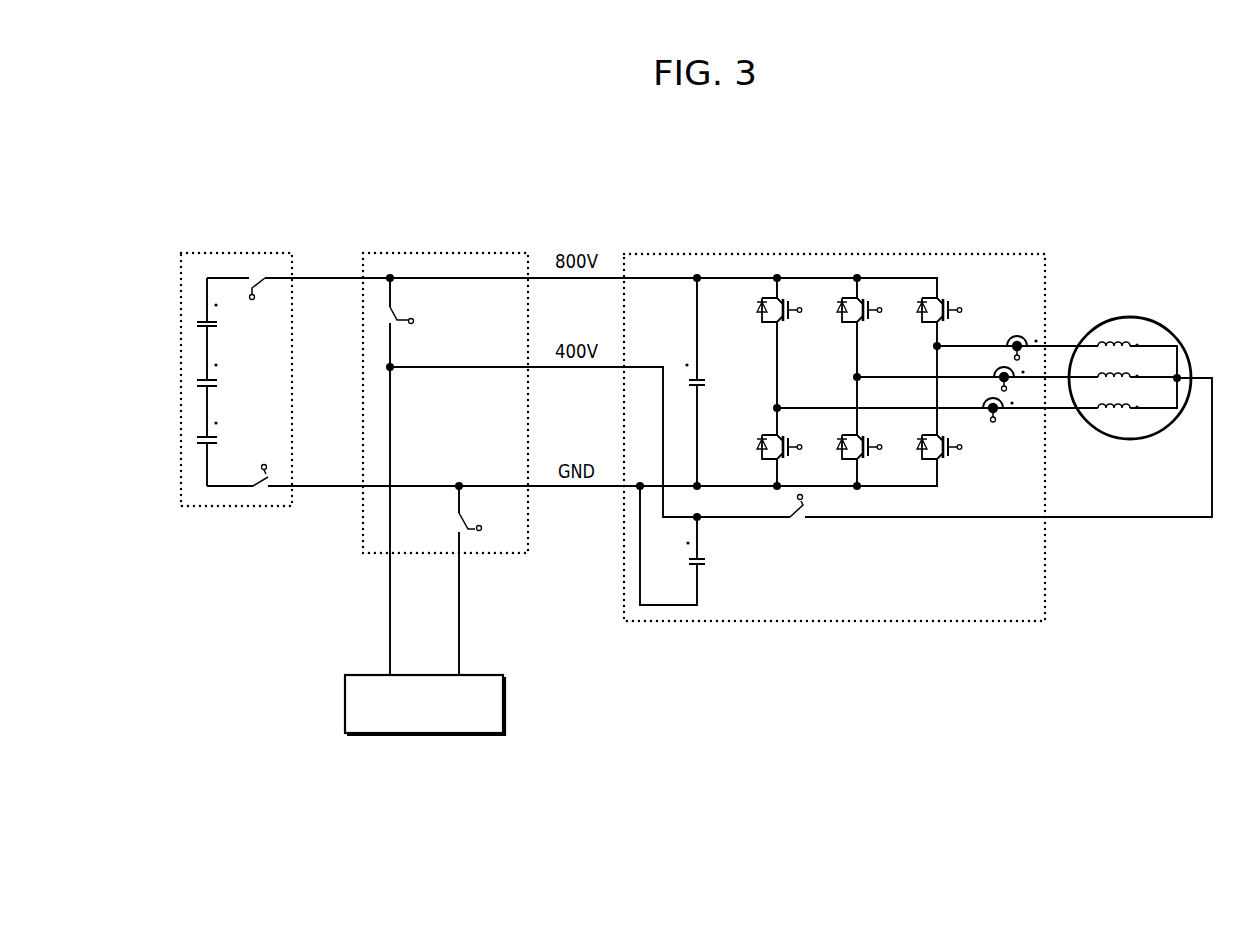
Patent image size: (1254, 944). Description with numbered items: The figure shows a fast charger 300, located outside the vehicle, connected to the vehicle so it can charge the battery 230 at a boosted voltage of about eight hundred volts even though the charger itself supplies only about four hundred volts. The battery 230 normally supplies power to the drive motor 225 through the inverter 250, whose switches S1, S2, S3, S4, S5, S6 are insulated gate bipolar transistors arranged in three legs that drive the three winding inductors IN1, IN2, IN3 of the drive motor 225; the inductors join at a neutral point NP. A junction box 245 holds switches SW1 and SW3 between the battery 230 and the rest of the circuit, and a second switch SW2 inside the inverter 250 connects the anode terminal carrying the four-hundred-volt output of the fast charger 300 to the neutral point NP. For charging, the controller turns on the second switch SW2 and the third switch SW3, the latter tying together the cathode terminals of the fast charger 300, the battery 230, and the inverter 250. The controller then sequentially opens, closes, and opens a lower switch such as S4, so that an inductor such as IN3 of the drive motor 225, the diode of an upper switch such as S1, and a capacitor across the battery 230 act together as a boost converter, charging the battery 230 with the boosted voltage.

The battery 230 is at (233, 253).
The junction box 245 is at (445, 371).
The inverter 250 is at (834, 406).
The drive motor 225 is at (1139, 422).
The fast charger 300 is at (505, 704).
The first switch SW1 is at (413, 308).
The second switch SW2 is at (800, 522).
The third switch SW3 is at (483, 515).
The switch of inverter S1 is at (762, 318).
The switch of inverter S2 is at (842, 318).
The switch of inverter S3 is at (922, 318).
The switch of inverter S4 is at (762, 438).
The switch of inverter S5 is at (872, 458).
The switch of inverter S6 is at (957, 458).
The inductor of drive motor IN1 is at (1111, 343).
The inductor of drive motor IN2 is at (1129, 376).
The inductor of drive motor IN3 is at (1100, 406).
The neutral point NP is at (1180, 377).